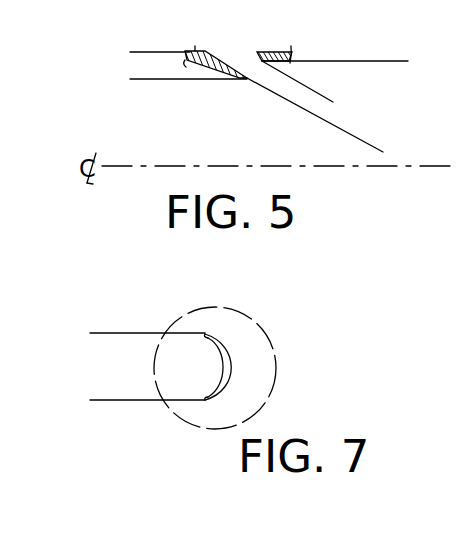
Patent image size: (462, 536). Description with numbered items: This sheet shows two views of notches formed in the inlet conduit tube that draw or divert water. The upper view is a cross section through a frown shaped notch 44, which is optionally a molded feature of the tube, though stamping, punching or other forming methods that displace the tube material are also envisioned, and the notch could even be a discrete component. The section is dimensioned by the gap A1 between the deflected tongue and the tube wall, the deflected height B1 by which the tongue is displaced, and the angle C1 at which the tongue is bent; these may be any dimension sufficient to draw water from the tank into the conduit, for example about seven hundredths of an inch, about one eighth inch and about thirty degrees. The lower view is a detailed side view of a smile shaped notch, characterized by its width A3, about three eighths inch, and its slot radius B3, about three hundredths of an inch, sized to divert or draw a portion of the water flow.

In FIG. 5, the frown shaped notch 44 is at (257, 35).
In FIG. 5, the deflected height B1 is at (137, 25).
In FIG. 5, the gap A1 is at (338, 75).
In FIG. 5, the angle C1 is at (403, 68).
In FIG. 7, the width A3 is at (97, 339).
In FIG. 7, the slot radius B3 is at (206, 408).